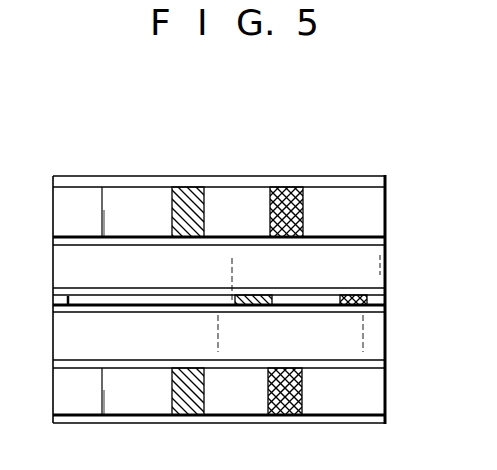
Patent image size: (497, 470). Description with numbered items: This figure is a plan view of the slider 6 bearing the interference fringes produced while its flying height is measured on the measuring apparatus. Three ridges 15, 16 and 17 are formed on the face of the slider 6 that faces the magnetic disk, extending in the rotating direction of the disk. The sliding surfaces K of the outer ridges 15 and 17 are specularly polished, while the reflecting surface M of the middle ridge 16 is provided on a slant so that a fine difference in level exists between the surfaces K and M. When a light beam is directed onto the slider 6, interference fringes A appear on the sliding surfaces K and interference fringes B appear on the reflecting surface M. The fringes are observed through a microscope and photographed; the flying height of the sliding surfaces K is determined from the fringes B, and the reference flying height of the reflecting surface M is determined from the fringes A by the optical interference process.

The slider 6 is at (392, 172).
The ridge 15 is at (334, 187).
The ridge 16 is at (378, 288).
The ridge 17 is at (357, 421).
The interference fringes A is at (185, 190).
The interference fringes B is at (252, 296).
The sliding surfaces K is at (380, 206).
The reflecting surface M is at (133, 302).